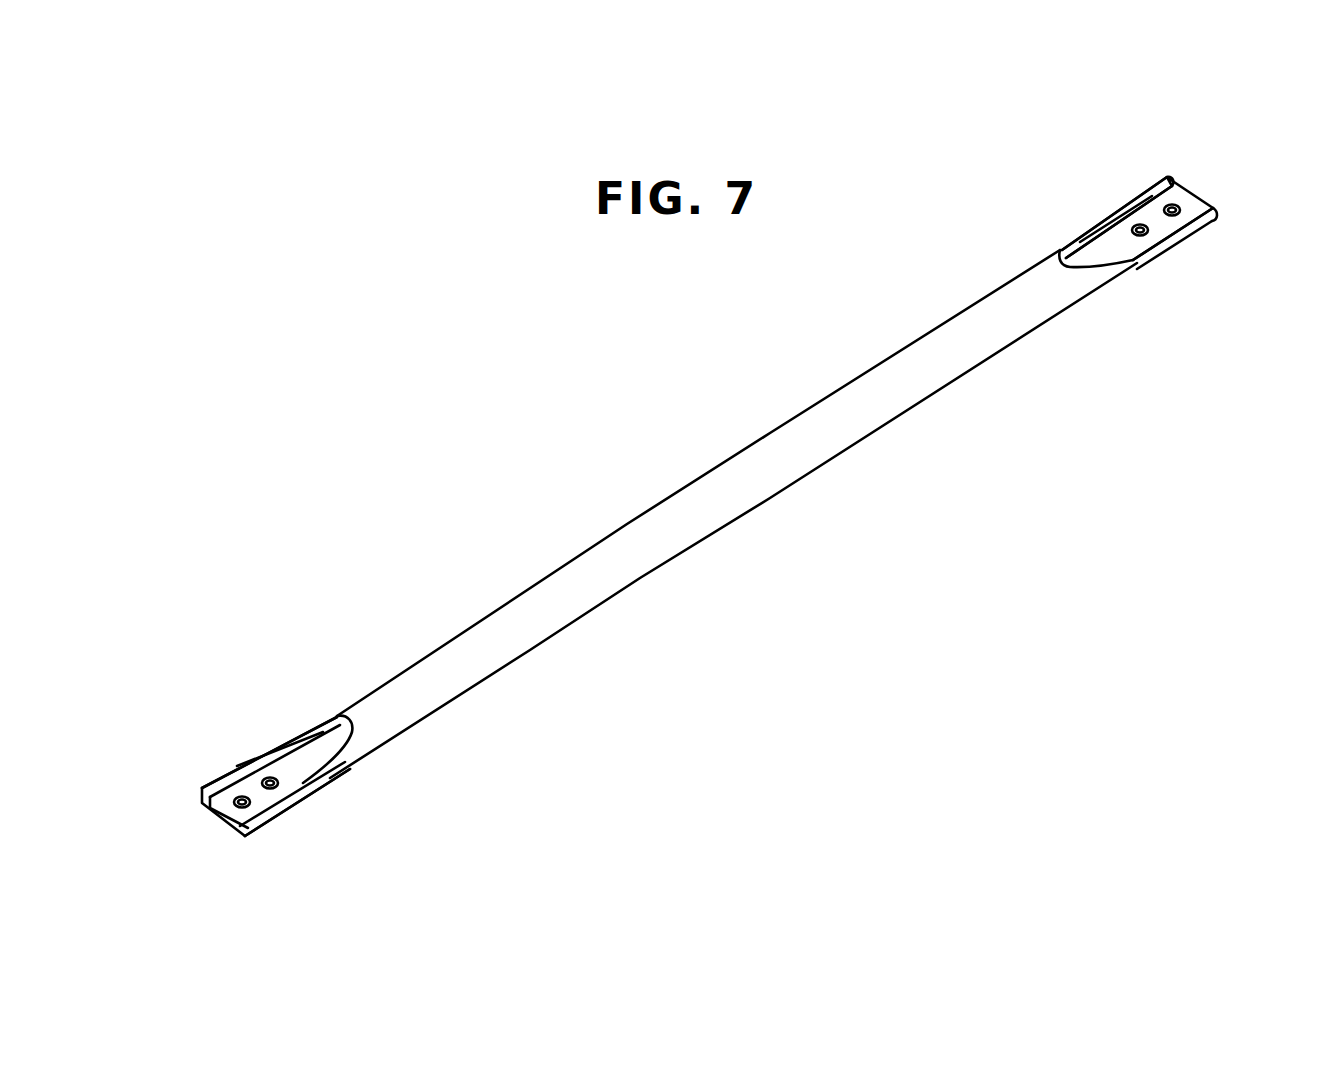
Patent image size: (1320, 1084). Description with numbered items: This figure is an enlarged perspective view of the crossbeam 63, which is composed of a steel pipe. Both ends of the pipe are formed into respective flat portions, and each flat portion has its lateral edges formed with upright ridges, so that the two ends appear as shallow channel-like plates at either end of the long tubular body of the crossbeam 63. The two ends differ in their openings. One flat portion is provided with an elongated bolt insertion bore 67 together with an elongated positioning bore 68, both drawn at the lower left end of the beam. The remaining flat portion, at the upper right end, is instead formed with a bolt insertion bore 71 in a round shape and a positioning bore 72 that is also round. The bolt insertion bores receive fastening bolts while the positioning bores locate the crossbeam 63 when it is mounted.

The crossbeam 63 is at (627, 523).
The elongated bolt insertion bore 67 is at (233, 835).
The elongated positioning bore 68 is at (280, 790).
The bolt insertion bore 71 is at (1205, 230).
The positioning bore 72 is at (1137, 237).